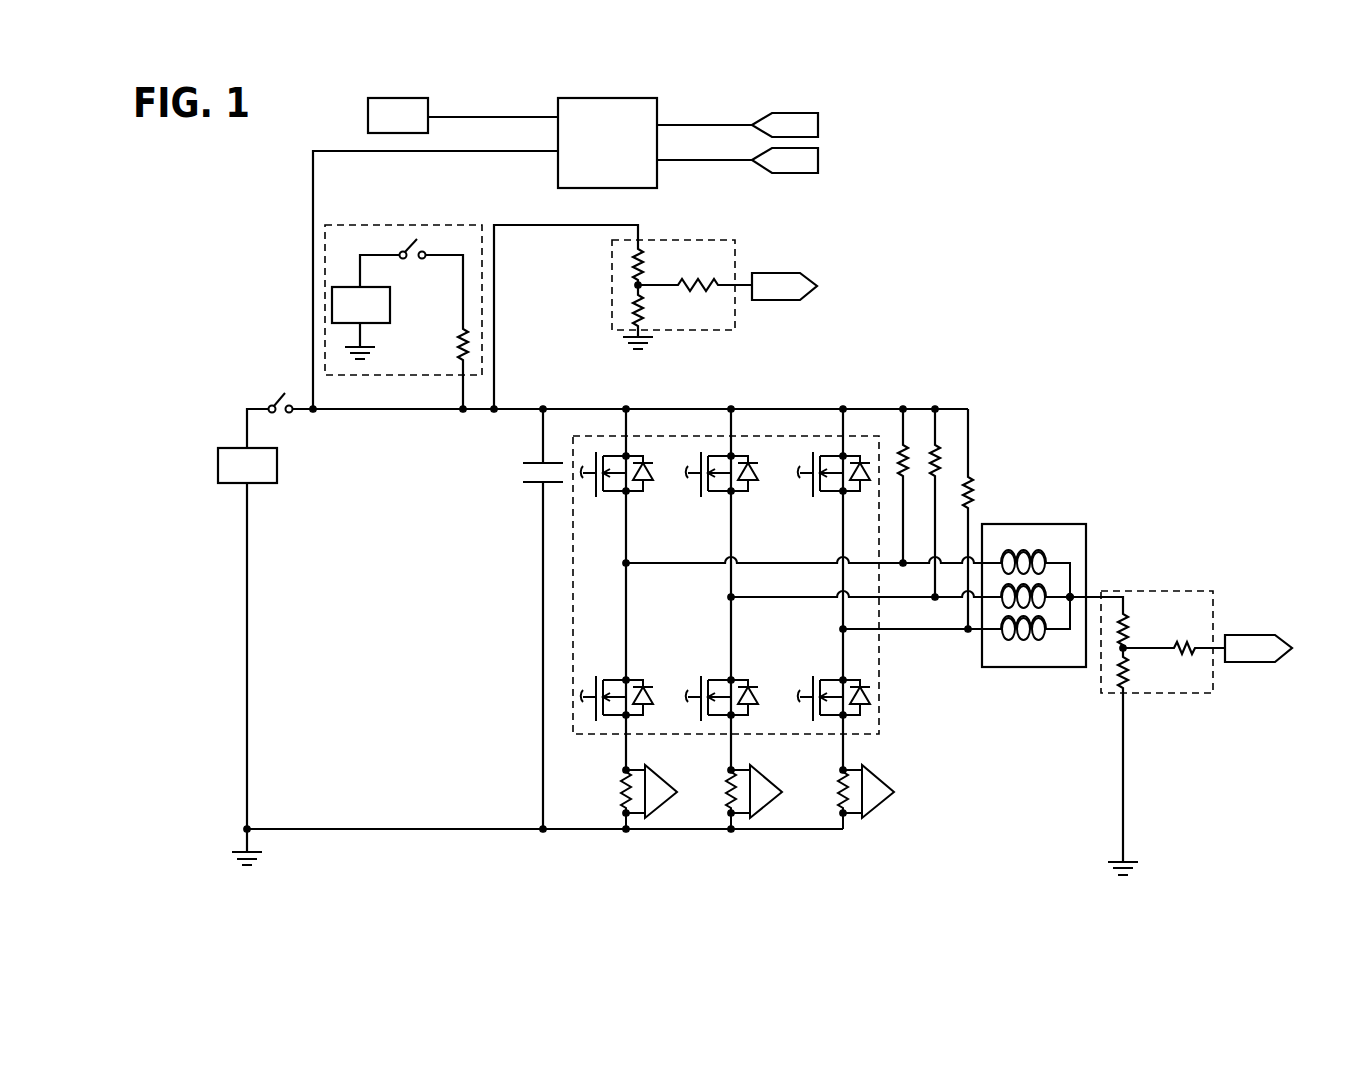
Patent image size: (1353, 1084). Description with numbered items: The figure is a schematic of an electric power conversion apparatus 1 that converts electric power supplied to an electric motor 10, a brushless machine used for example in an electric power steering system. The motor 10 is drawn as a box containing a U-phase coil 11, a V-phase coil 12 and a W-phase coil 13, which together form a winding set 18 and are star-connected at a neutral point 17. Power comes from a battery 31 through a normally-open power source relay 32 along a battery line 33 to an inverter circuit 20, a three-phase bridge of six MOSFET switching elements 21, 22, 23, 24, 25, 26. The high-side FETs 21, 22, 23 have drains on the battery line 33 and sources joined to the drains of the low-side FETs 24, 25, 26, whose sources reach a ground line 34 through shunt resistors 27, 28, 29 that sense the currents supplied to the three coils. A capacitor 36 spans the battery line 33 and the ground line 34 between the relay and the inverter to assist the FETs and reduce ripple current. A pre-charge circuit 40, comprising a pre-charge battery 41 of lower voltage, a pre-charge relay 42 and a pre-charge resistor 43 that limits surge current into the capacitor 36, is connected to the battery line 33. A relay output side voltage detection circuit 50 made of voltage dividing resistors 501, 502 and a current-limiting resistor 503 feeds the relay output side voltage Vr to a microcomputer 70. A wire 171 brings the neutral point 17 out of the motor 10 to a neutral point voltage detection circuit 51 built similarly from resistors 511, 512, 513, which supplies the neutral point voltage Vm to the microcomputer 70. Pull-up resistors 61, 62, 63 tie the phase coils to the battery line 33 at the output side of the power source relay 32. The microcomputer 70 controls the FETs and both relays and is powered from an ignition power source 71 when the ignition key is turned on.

The electric power conversion apparatus 1 is at (400, 863).
The electric motor 10 is at (1043, 609).
The U-phase coil 11 is at (1058, 547).
The V-phase coil 12 is at (1025, 643).
The W-phase coil 13 is at (1040, 643).
The neutral point 17 is at (1072, 595).
The wire 171 is at (1097, 602).
The winding set 18 is at (1008, 645).
The inverter circuit 20 is at (726, 558).
The switching element (FET) 21 is at (616, 496).
The switching element (FET) 22 is at (721, 496).
The switching element (FET) 23 is at (833, 496).
The switching element (FET) 24 is at (616, 677).
The switching element (FET) 25 is at (721, 677).
The switching element (FET) 26 is at (832, 677).
The shunt resistor 27 is at (615, 795).
The shunt resistor 28 is at (721, 805).
The shunt resistor 29 is at (831, 805).
The battery 31 is at (233, 447).
The power source relay 32 is at (269, 398).
The battery line 33 is at (530, 409).
The ground line 34 is at (457, 829).
The capacitor 36 is at (523, 465).
The pre-charge circuit 40 is at (403, 291).
The pre-charge battery 41 is at (390, 305).
The pre-charge relay 42 is at (405, 242).
The pre-charge resistor 43 is at (458, 342).
The relay output side voltage detection circuit 50 is at (655, 299).
The resistor 501 is at (633, 257).
The resistor 502 is at (632, 302).
The resistor 503 is at (697, 292).
The neutral point voltage detection circuit 51 is at (1196, 705).
The resistor 511 is at (1128, 612).
The resistor 512 is at (1128, 683).
The resistor 513 is at (1190, 655).
The pull-up resistor 61 is at (906, 440).
The pull-up resistor 62 is at (936, 440).
The pull-up resistor 63 is at (972, 478).
The microcomputer 70 is at (558, 104).
The ignition power source 71 is at (368, 117).